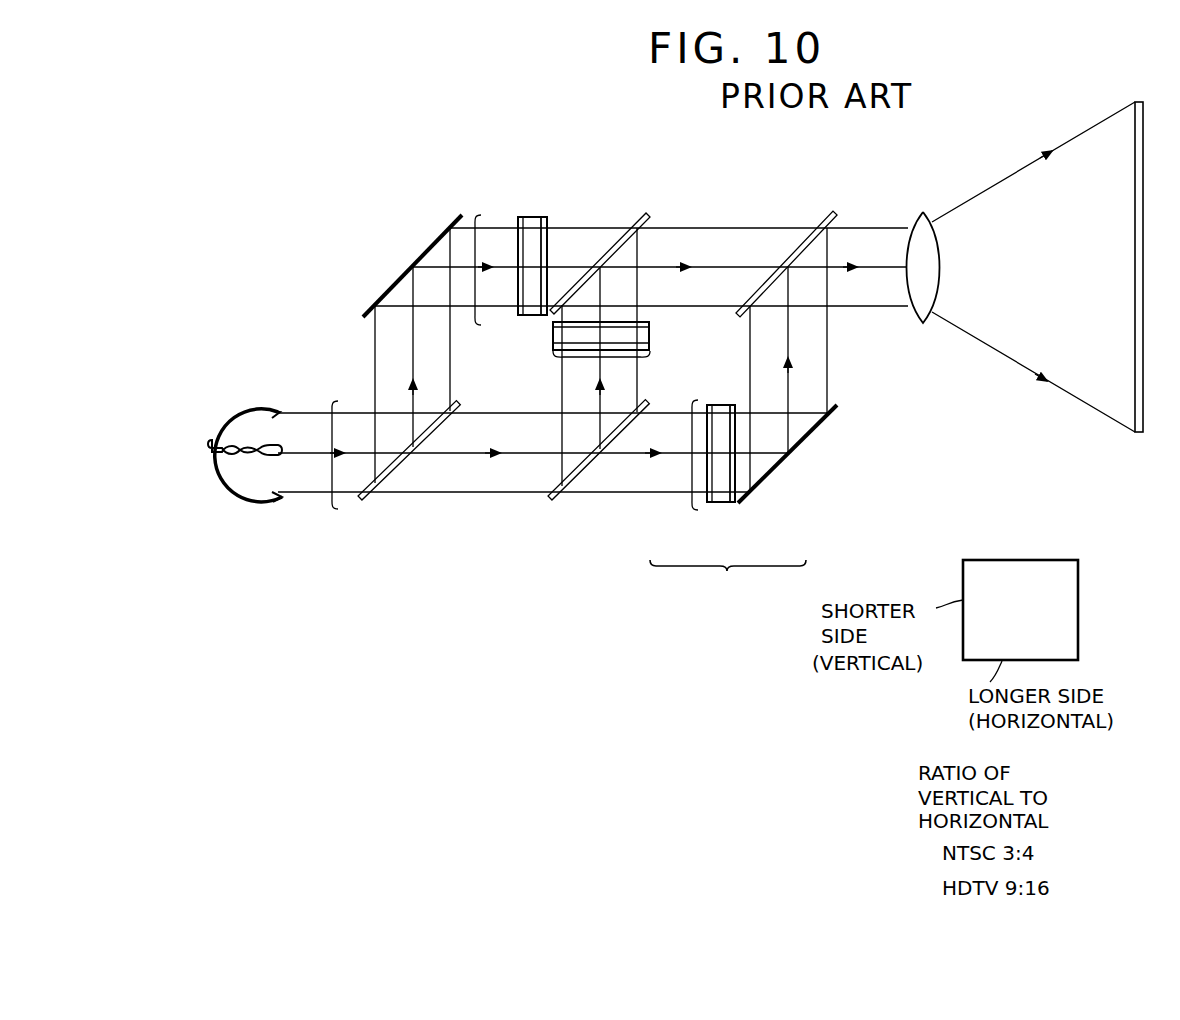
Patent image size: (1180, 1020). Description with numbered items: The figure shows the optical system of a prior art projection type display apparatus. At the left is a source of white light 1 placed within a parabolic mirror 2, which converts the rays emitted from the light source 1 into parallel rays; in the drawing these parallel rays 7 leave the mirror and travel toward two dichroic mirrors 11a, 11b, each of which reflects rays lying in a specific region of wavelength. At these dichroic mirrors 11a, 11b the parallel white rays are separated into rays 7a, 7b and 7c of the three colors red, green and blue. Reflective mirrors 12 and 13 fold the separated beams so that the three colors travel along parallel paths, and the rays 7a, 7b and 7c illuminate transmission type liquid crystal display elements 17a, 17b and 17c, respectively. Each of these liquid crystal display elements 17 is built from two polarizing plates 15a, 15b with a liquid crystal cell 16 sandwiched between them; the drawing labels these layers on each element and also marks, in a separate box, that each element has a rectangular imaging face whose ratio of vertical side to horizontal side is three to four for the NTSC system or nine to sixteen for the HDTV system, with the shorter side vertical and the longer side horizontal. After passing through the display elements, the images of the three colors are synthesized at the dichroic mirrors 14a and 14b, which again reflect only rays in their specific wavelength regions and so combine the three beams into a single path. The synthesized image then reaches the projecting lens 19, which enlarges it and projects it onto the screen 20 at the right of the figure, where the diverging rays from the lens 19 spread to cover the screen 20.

The source of white light 1 is at (240, 465).
The parabolic mirror 2 is at (250, 492).
The condenser lens 7 is at (332, 464).
The rays 7a is at (692, 470).
The rays 7b is at (578, 360).
The rays 7c is at (475, 285).
The dichroic mirror 11a is at (362, 500).
The dichroic mirror 11b is at (555, 500).
The reflective mirror 12 is at (403, 277).
The reflective mirror 13 is at (812, 430).
The dichroic mirror 14a is at (648, 215).
The dichroic mirror 14b is at (835, 213).
The polarizing plate 15a is at (517, 217).
The polarizing plate 15b is at (548, 217).
The liquid crystal cell 16 is at (535, 217).
The liquid crystal display elements 17 is at (741, 604).
The liquid crystal display element 17a is at (742, 400).
The liquid crystal display element 17b is at (552, 351).
The liquid crystal display element 17c is at (544, 326).
The projecting lens 19 is at (923, 325).
The screen 20 is at (1134, 434).